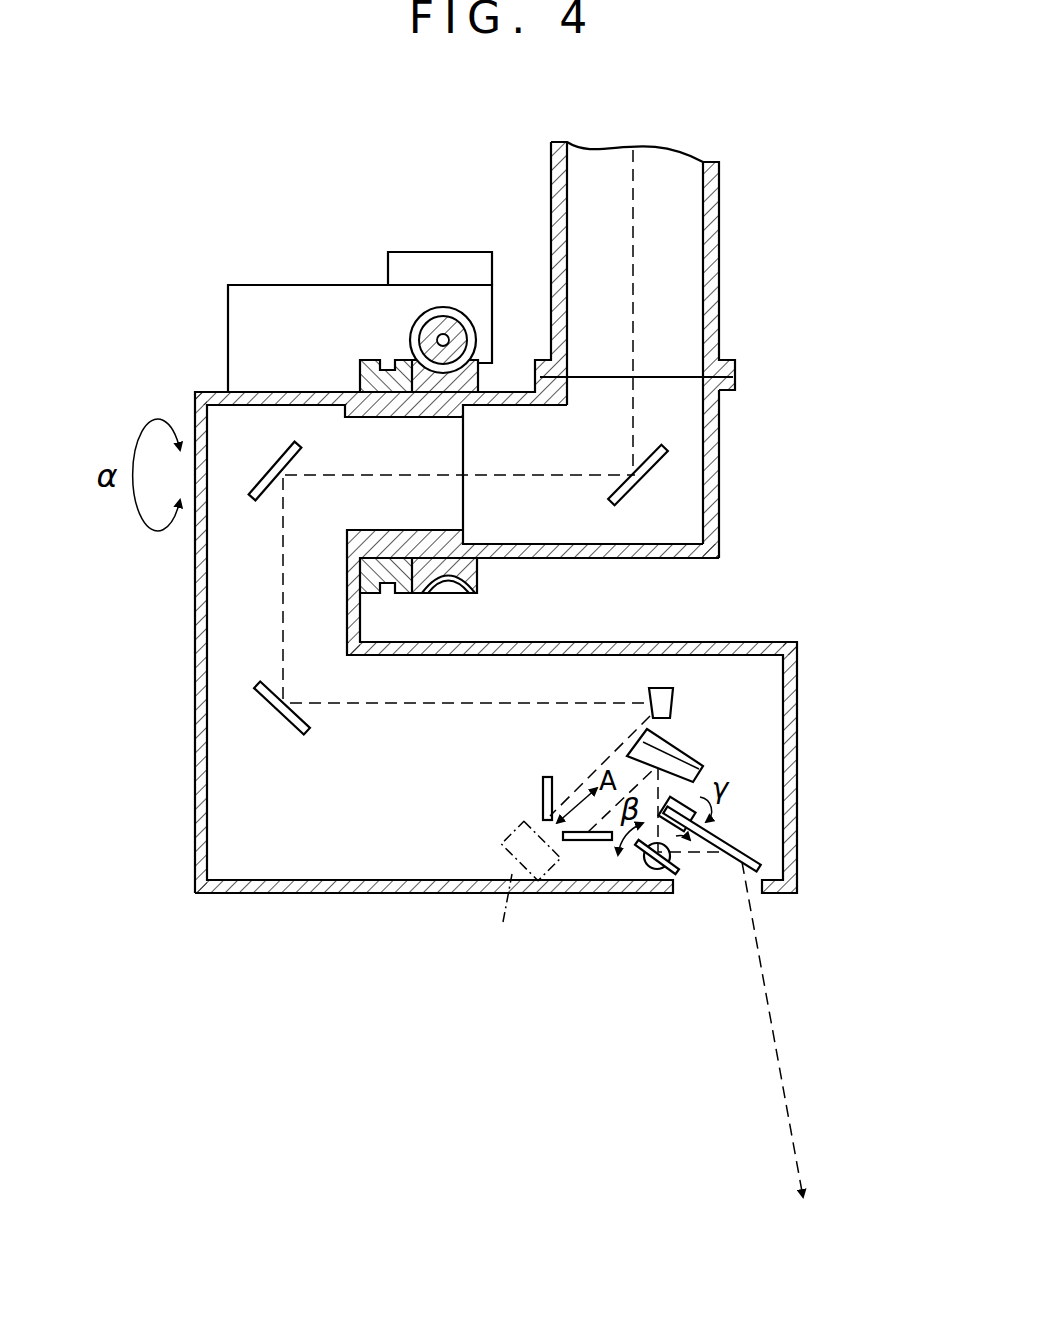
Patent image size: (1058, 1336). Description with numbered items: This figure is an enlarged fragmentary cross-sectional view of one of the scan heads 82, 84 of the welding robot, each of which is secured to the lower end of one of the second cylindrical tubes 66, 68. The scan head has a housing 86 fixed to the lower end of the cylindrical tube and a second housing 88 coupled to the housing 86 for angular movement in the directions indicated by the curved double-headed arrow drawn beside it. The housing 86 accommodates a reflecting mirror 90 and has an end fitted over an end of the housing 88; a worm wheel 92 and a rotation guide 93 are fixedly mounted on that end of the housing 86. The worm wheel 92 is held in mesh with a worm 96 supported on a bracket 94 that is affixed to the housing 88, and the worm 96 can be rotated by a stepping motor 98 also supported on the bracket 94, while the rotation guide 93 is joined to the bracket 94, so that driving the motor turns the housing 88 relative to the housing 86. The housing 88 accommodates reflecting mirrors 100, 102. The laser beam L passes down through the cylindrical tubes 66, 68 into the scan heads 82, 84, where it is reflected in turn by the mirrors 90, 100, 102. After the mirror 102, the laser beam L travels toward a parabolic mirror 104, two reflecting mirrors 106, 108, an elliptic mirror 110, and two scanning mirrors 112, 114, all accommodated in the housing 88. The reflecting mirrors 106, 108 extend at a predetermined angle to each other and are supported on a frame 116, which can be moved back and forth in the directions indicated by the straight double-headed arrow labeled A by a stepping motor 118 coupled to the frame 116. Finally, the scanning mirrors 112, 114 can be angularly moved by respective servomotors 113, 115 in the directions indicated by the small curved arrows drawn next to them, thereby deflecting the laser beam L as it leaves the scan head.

The second cylindrical tube 66 is at (700, 343).
The second cylindrical tube 68 is at (712, 283).
The scan head 82 is at (529, 517).
The scan head 84 is at (766, 385).
The housing 86 is at (719, 462).
The housing 88 is at (207, 633).
The reflecting mirror 90 is at (660, 470).
The worm wheel 92 is at (480, 573).
The rotation guide 93 is at (372, 359).
The bracket 94 is at (283, 310).
The worm 96 is at (466, 338).
The stepping motor 98 is at (451, 268).
The reflecting mirror 100 is at (268, 468).
The reflecting mirror 102 is at (294, 722).
The parabolic mirror 104 is at (674, 702).
The reflecting mirror 106 is at (543, 802).
The reflecting mirror 108 is at (592, 841).
The elliptic mirror 110 is at (675, 752).
The scanning mirror 112 is at (655, 870).
The servomotor 113 is at (672, 858).
The scanning mirror 114 is at (750, 853).
The servomotor 115 is at (706, 814).
The frame 116 is at (522, 829).
The stepping motor 118 is at (490, 914).
The laser beam L is at (778, 1028).